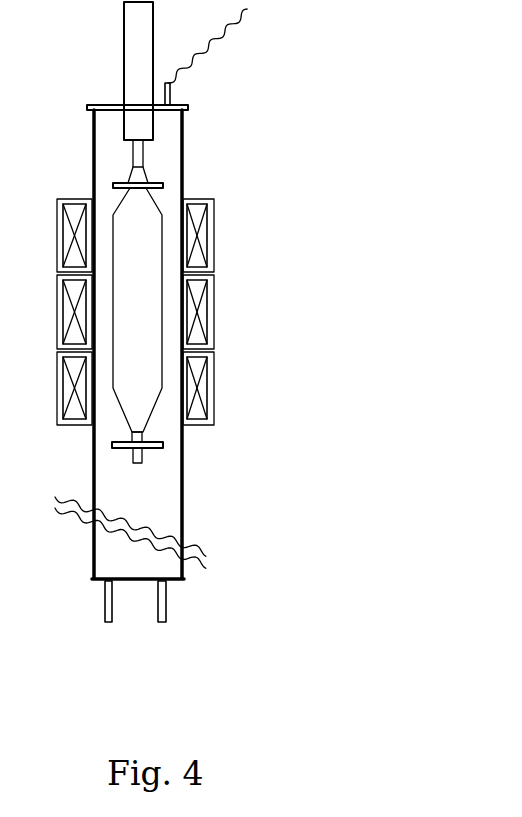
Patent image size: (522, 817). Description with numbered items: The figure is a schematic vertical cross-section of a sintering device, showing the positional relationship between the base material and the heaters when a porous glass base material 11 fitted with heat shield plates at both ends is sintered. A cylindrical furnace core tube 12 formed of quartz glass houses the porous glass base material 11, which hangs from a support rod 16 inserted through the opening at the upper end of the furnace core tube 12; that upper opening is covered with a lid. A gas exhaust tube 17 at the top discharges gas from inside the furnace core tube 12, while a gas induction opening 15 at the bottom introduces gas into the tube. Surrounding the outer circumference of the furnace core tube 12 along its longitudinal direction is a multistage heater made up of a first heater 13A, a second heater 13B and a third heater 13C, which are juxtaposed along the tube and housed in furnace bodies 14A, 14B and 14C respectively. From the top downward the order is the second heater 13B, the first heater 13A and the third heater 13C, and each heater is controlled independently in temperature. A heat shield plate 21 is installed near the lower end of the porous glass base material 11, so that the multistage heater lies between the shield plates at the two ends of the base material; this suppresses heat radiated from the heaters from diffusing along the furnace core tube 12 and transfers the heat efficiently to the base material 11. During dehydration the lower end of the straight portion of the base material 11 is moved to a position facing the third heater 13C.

The porous glass base material 11 is at (140, 176).
The furnace core tube 12 is at (182, 538).
The first heater 13A is at (205, 313).
The second heater 13B is at (205, 230).
The third heater 13C is at (205, 385).
The furnace body 14A is at (215, 275).
The furnace body 14B is at (215, 201).
The furnace body 14C is at (215, 353).
The gas induction opening 15 is at (158, 613).
The support rod 16 is at (122, 78).
The gas exhaust tube 17 is at (223, 36).
The heat shield plate 21 is at (168, 443).